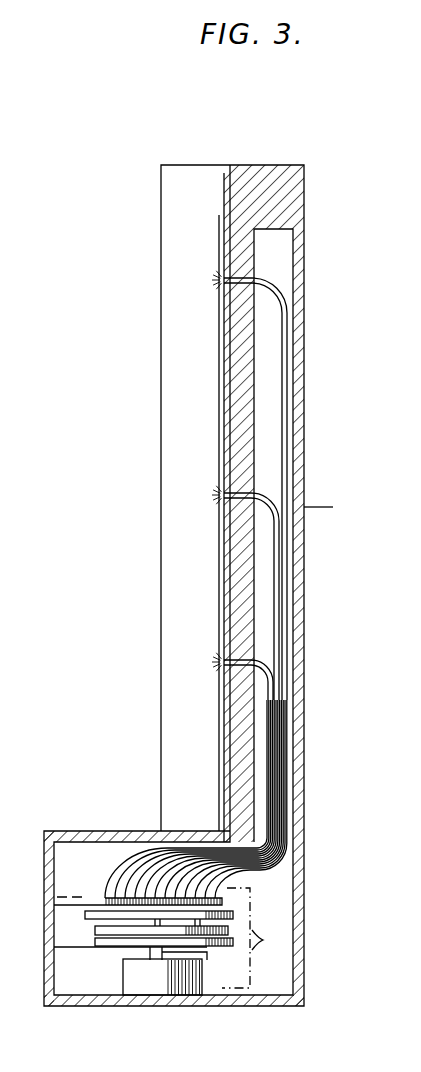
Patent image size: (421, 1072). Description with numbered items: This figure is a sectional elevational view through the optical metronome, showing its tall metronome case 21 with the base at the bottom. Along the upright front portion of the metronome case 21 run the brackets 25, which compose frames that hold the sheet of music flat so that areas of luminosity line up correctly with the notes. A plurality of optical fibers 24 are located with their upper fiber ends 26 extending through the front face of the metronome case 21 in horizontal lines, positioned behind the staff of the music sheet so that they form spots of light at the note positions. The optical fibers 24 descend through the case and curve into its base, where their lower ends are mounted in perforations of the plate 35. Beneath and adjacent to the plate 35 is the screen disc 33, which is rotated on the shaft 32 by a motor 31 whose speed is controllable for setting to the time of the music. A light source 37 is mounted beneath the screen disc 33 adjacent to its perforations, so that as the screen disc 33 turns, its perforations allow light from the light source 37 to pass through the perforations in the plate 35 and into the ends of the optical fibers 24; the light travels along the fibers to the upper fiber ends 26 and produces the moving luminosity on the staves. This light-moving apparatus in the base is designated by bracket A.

The metronome case 21 is at (304, 507).
The optical fibers 24 is at (256, 877).
The brackets 25 is at (219, 376).
The upper fiber ends 26 is at (250, 279).
The motor 31 is at (153, 983).
The shaft 32 is at (165, 952).
The screen disc 33 is at (85, 921).
The plate 35 is at (88, 898).
The light source 37 is at (118, 936).
The bracket A is at (250, 938).